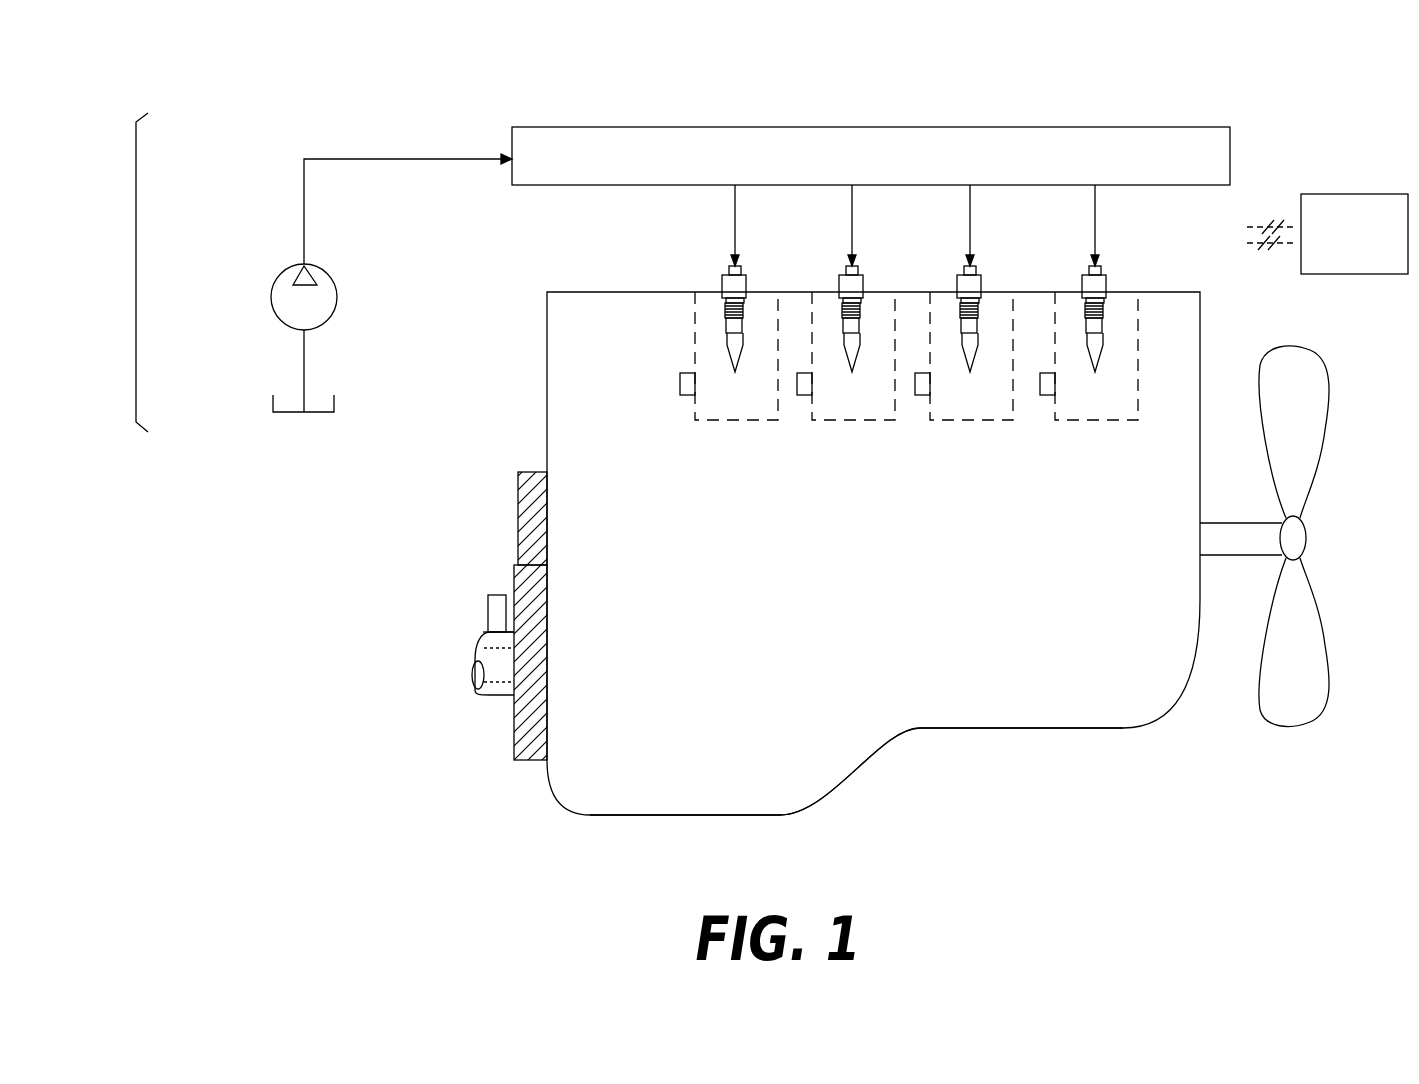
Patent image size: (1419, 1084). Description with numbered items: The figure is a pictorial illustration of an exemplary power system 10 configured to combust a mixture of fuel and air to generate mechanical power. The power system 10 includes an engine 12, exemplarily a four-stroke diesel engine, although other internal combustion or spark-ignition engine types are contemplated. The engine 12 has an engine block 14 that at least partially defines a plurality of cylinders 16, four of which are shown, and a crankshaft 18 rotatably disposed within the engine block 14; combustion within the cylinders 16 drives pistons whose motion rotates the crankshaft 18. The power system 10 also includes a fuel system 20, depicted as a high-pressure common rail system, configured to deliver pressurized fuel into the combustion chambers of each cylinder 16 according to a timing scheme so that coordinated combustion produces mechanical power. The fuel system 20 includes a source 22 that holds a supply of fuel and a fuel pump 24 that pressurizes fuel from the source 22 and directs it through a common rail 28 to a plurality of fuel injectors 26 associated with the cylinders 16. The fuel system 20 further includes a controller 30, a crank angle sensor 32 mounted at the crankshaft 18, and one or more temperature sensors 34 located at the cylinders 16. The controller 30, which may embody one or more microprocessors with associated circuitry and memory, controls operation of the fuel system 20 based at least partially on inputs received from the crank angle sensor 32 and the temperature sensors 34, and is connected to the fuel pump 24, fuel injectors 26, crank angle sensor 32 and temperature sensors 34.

The power system 10 is at (1020, 104).
The engine 12 is at (869, 580).
The engine block 14 is at (980, 703).
The cylinders 16 is at (755, 412).
The crankshaft 18 is at (497, 698).
The fuel system 20 is at (136, 278).
The source 22 is at (305, 412).
The fuel pump 24 is at (270, 302).
The fuel injectors 26 is at (840, 290).
The common rail 28 is at (872, 167).
The controller 30 is at (1344, 247).
The crank angle sensor 32 is at (497, 595).
The temperature sensors 34 is at (687, 397).